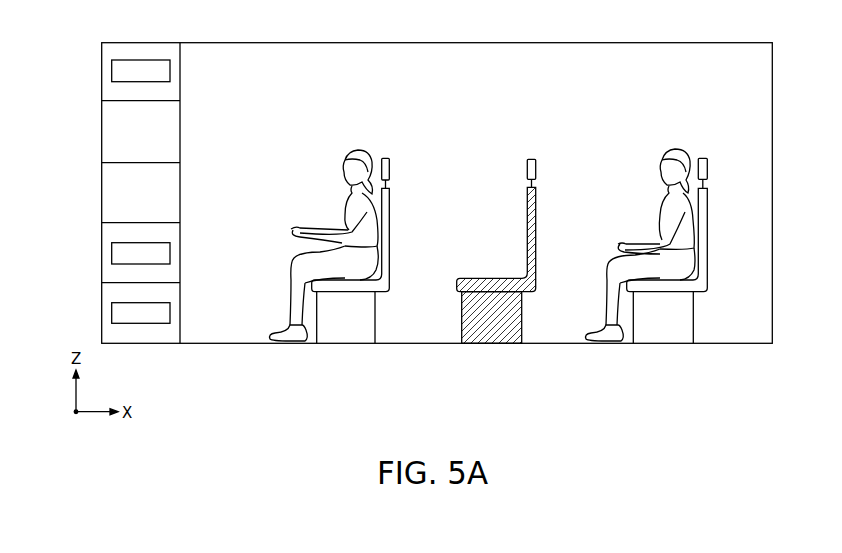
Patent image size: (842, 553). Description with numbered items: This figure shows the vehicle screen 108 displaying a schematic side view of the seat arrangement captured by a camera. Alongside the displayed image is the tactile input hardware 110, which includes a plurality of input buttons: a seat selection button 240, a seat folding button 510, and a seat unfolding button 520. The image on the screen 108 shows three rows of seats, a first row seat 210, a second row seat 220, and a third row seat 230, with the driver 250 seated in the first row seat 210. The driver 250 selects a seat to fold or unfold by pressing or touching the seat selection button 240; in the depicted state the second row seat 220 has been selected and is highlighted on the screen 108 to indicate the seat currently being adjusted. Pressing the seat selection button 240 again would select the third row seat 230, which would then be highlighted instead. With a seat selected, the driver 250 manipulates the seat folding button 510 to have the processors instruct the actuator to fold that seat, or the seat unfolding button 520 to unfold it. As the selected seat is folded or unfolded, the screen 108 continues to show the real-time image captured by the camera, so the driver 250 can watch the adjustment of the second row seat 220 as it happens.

The screen 108 is at (443, 42).
The tactile input hardware 110 is at (148, 42).
The seat selection button 240 is at (111, 72).
The seat folding button 510 is at (111, 252).
The seat unfolding button 520 is at (111, 312).
The first row seat 210 is at (386, 158).
The second row seat 220 is at (532, 159).
The third row seat 230 is at (703, 158).
The driver 250 is at (352, 150).